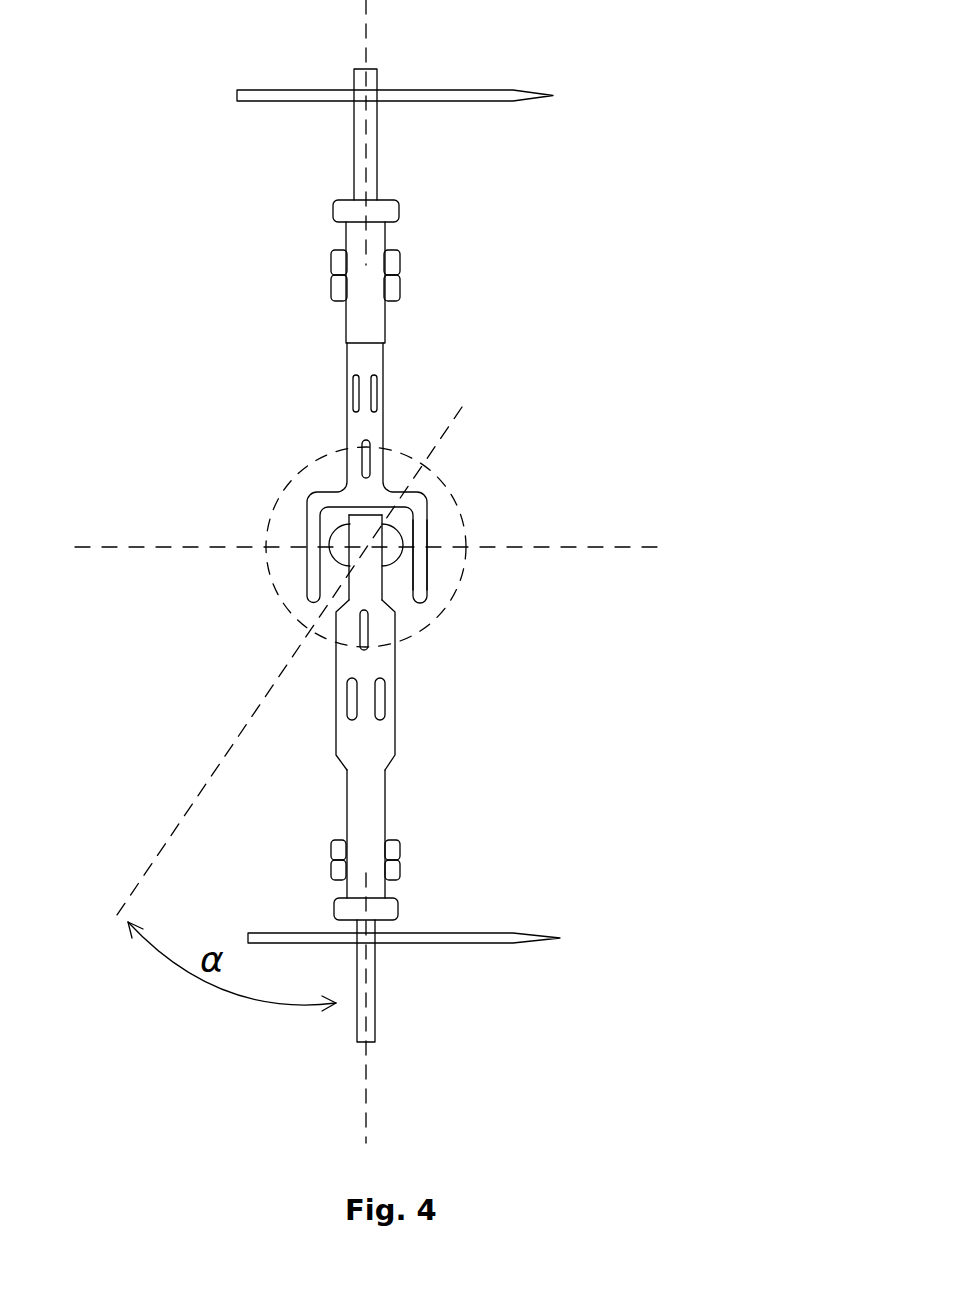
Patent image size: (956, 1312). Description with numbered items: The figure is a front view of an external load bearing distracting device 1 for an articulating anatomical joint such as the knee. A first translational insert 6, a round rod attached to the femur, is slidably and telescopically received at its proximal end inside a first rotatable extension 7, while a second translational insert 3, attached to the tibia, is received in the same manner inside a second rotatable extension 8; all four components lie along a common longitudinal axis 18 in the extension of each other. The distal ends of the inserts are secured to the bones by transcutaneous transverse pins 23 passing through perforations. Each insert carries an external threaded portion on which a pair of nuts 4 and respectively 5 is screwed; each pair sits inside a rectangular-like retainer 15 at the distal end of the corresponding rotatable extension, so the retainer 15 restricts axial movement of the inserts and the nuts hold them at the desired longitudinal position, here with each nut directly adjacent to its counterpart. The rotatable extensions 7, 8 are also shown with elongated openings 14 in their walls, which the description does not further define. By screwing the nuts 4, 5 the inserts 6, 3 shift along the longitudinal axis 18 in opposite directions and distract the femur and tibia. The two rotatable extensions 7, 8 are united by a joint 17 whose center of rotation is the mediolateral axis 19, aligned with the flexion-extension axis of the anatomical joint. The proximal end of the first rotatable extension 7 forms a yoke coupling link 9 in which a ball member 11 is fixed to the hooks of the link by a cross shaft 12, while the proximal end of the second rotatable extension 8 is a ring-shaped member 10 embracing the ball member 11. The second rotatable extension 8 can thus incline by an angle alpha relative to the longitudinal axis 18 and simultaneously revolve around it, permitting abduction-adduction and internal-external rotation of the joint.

The external load bearing distracting device 1 is at (477, 215).
The second translational insert 3 is at (377, 982).
The pair of nuts 4 is at (335, 290).
The pair of nuts 5 is at (398, 877).
The first translational insert 6 is at (363, 191).
The first rotatable extension 7 is at (387, 426).
The second rotatable extension 8 is at (383, 660).
The coupling link 9 is at (418, 530).
The ring-shaped member 10 is at (347, 522).
The ball member 11 is at (340, 564).
The cross shaft 12 is at (342, 532).
The slots 14 is at (353, 385).
The retainer 15 is at (363, 312).
The joint 17 is at (439, 475).
The longitudinal axis 18 is at (348, 57).
The mediolateral axis 19 is at (371, 530).
The transcutaneous transverse pins 23 is at (498, 86).